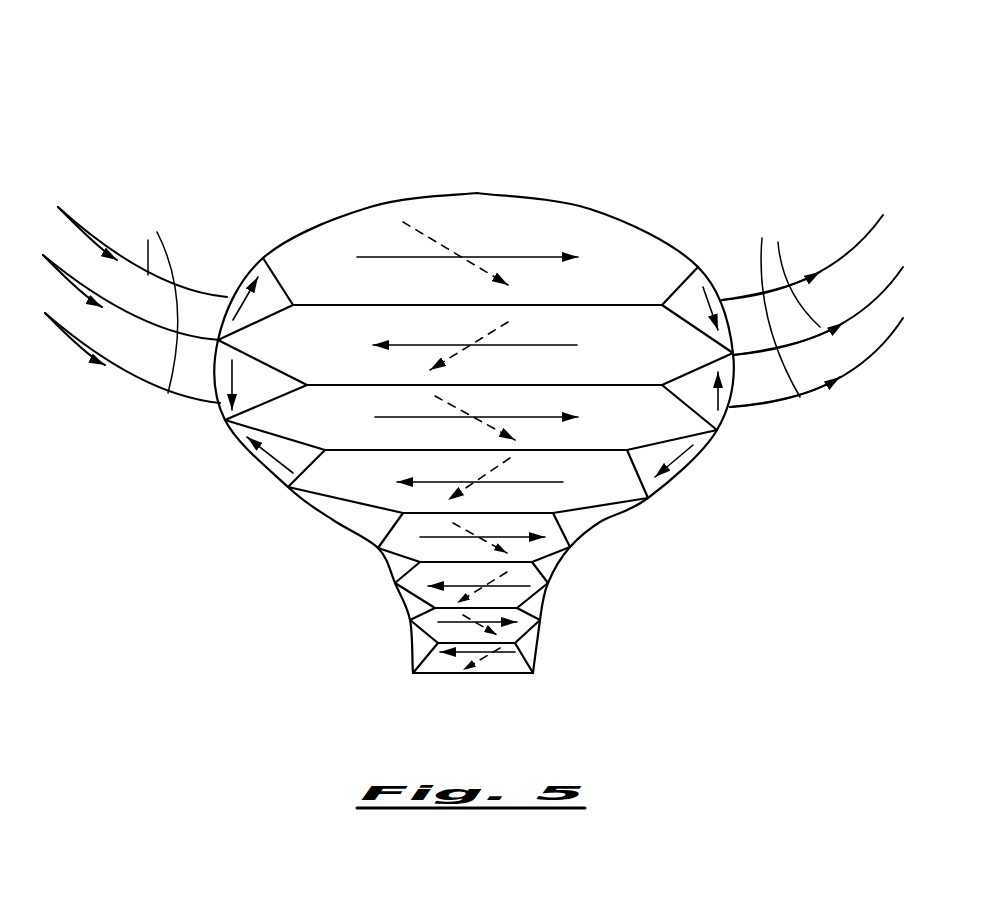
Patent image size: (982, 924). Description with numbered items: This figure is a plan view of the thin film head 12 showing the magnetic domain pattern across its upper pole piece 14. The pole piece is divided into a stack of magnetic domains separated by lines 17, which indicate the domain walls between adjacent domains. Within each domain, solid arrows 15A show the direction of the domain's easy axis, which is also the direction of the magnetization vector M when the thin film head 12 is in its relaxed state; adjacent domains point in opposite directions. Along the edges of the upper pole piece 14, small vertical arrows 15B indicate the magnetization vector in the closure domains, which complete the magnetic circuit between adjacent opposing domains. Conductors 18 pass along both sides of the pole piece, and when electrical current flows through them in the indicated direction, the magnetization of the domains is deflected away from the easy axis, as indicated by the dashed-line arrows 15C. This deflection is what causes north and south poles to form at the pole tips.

The thin film head 12 is at (200, 137).
The upper pole piece 14 is at (625, 215).
The solid arrows 15A is at (442, 260).
The small vertical arrows 15B is at (237, 312).
The dashed-line arrows 15C is at (428, 238).
The lines 17 is at (337, 305).
The conductors 18 is at (97, 245).